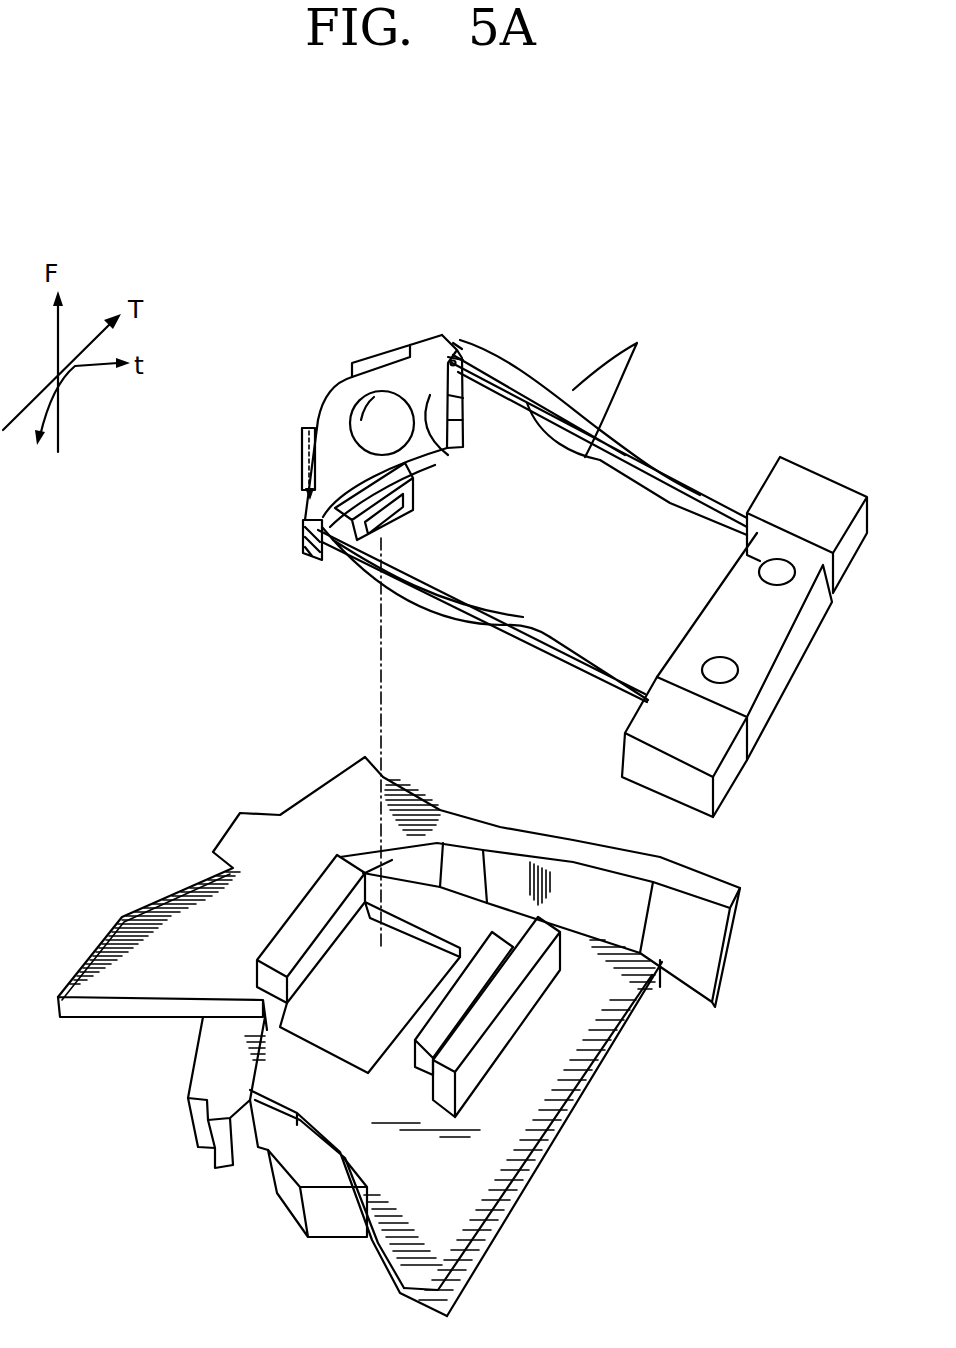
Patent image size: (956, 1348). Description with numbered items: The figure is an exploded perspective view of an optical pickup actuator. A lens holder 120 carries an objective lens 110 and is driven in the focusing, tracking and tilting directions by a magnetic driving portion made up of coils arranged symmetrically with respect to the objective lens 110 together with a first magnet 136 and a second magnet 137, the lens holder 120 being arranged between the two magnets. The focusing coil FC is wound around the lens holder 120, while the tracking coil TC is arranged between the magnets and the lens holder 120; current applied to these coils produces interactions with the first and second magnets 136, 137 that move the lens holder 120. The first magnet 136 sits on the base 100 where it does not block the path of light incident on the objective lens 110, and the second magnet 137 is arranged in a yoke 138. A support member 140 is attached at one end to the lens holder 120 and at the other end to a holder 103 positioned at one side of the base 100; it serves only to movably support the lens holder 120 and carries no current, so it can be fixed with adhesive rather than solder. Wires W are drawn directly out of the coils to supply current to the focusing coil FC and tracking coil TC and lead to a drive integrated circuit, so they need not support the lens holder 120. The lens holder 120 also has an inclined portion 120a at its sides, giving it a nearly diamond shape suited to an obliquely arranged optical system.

The base 100 is at (137, 988).
The holder 103 is at (767, 638).
The objective lens 110 is at (404, 403).
The lens holder 120 is at (400, 373).
The inclined portion 120a is at (327, 392).
The first magnet 136 is at (323, 890).
The second magnet 137 is at (470, 988).
The yoke 138 is at (483, 1057).
The support member 140 is at (683, 480).
The wires W is at (617, 380).
The tracking coil TC is at (475, 372).
The focusing coil FC is at (423, 477).